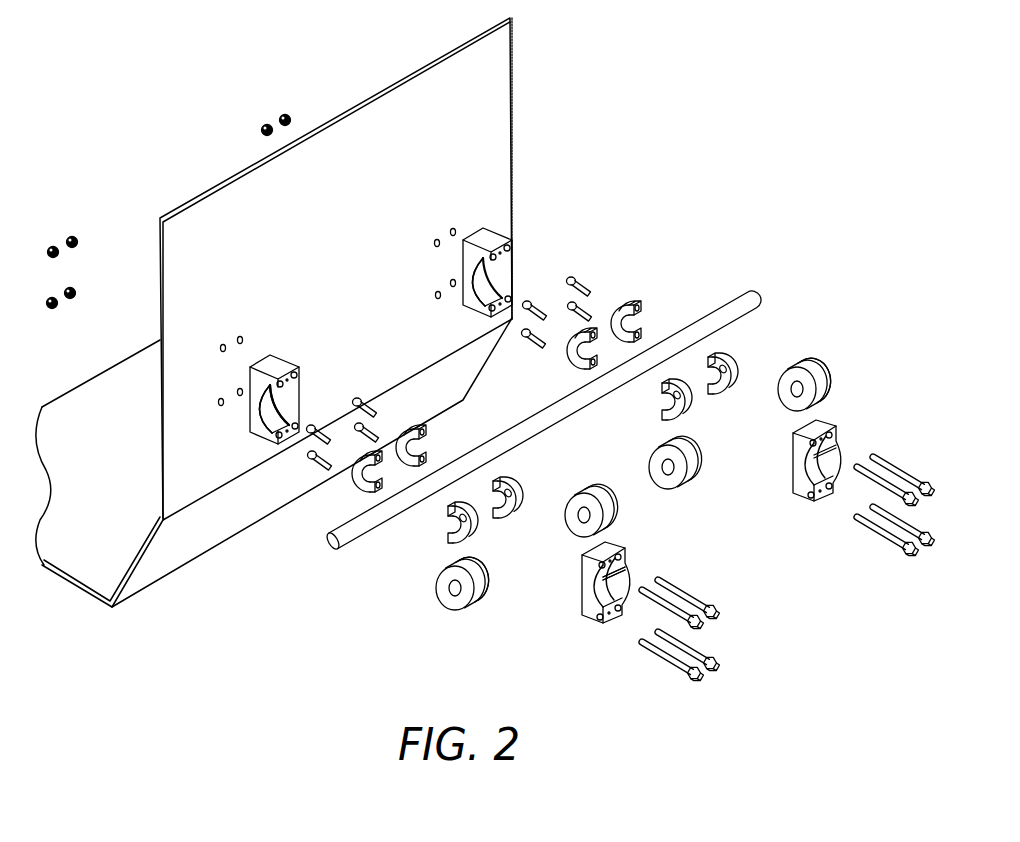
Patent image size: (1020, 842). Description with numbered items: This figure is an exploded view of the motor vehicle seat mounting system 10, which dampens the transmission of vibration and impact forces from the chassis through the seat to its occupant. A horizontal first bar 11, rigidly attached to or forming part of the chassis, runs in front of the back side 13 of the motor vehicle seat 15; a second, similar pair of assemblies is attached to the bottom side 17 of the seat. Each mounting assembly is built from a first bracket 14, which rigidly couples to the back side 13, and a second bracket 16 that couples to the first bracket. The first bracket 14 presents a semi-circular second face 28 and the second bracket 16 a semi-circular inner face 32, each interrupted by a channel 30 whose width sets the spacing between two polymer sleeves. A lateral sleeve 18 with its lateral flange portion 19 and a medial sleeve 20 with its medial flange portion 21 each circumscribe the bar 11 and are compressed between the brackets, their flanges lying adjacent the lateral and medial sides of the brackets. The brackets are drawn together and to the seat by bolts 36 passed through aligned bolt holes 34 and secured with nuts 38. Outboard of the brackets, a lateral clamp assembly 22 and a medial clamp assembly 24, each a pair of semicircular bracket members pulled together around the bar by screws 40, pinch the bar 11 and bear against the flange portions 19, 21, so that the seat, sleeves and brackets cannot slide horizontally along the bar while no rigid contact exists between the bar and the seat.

The motor vehicle seat mounting system 10 is at (659, 204).
The first bar 11 is at (728, 299).
The back side 13 is at (332, 241).
The first bracket 14 is at (279, 359).
The motor vehicle seat 15 is at (526, 60).
The second bracket 16 is at (823, 423).
The bottom side 17 is at (78, 598).
The lateral sleeve 18 is at (808, 350).
The lateral flange portion 19 is at (827, 373).
The medial sleeve 20 is at (590, 481).
The medial flange portion 21 is at (612, 520).
The lateral clamp assembly 22 is at (346, 495).
The medial clamp assembly 24 is at (563, 367).
The second face 28 is at (268, 428).
The channel 30 is at (286, 421).
The inner face 32 is at (590, 575).
The bolt holes 34 is at (436, 240).
The bolts 36 is at (915, 473).
The nuts 38 is at (268, 120).
The screws 40 is at (545, 300).